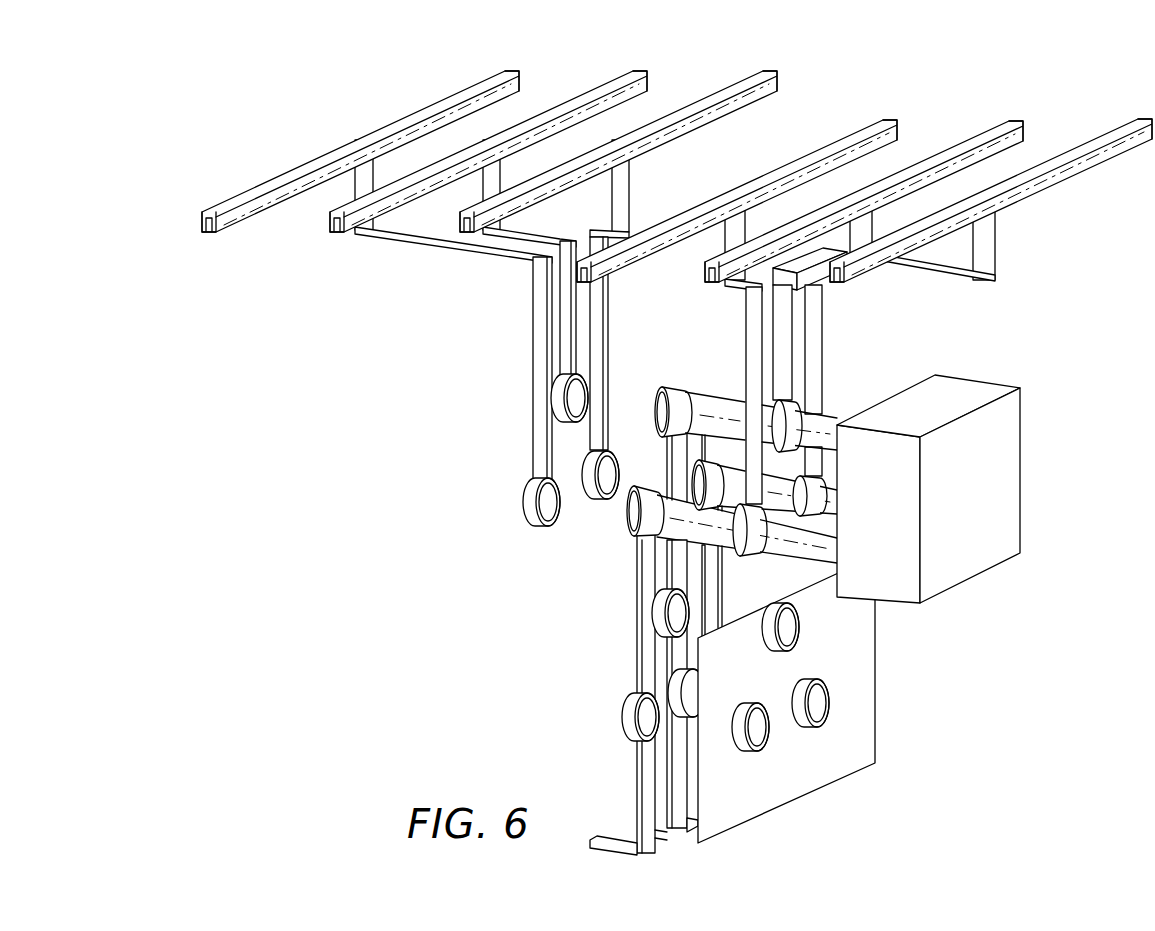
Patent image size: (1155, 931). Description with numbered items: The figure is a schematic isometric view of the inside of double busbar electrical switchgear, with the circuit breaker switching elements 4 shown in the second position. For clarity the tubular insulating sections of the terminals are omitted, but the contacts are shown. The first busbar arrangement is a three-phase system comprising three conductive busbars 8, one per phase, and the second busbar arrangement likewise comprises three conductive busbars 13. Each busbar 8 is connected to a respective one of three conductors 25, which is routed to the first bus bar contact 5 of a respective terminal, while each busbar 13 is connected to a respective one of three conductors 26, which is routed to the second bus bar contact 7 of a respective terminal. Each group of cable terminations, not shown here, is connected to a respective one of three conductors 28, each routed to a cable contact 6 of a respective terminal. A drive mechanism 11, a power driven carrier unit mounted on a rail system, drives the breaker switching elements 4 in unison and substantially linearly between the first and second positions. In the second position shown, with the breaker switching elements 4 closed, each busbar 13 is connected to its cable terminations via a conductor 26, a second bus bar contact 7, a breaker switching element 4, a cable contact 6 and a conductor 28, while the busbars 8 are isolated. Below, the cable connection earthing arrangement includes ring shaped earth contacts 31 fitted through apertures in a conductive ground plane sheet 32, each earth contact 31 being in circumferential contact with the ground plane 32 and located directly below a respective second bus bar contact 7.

The circuit breaker switching element 4 is at (828, 416).
The first bus bar contact 5 is at (556, 400).
The cable contact 6 is at (663, 385).
The second bus bar contact 7 is at (766, 405).
The busbar 8 is at (493, 74).
The drive mechanism 11 is at (1022, 388).
The busbar 13 is at (872, 126).
The conductor 25 is at (543, 231).
The conductor 26 is at (746, 350).
The conductor 28 is at (721, 618).
The earth contact 31 is at (796, 633).
The ground plane sheet 32 is at (790, 793).